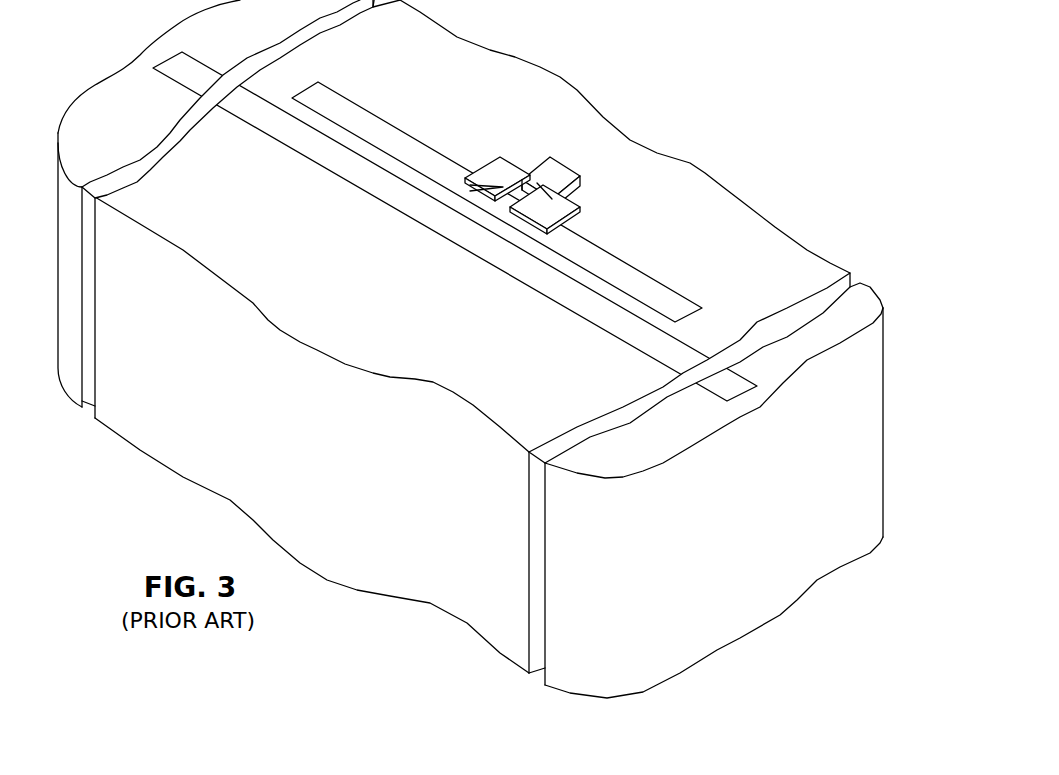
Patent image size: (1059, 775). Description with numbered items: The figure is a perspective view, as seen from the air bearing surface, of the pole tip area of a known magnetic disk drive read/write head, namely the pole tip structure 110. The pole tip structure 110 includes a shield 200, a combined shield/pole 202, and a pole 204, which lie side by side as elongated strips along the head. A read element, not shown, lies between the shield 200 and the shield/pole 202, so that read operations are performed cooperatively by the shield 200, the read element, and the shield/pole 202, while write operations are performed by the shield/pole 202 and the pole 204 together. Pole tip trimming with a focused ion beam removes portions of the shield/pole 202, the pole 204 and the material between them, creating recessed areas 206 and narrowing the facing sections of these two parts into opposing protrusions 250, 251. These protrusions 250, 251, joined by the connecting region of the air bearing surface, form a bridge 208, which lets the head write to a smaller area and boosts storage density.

The pole tip structure 110 is at (470, 349).
The shield 200 is at (538, 283).
The combined shield/pole 202 is at (398, 142).
The pole 204 is at (550, 160).
The recessed areas 206 is at (490, 160).
The bridge 208 is at (503, 187).
The protrusion 250 is at (520, 182).
The protrusion 251 is at (537, 183).